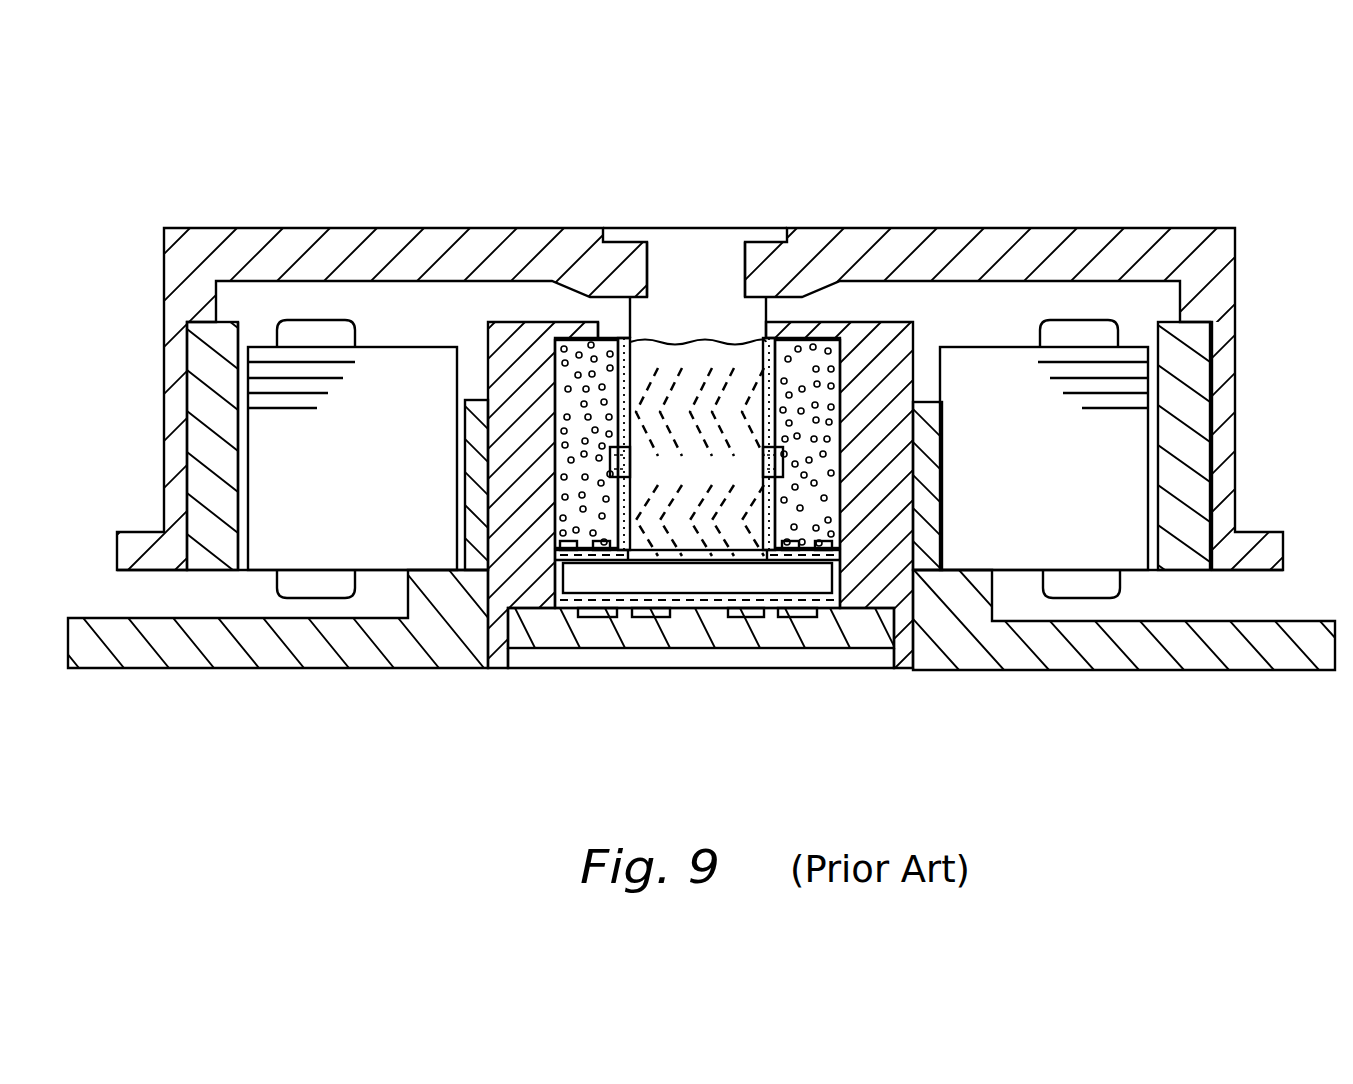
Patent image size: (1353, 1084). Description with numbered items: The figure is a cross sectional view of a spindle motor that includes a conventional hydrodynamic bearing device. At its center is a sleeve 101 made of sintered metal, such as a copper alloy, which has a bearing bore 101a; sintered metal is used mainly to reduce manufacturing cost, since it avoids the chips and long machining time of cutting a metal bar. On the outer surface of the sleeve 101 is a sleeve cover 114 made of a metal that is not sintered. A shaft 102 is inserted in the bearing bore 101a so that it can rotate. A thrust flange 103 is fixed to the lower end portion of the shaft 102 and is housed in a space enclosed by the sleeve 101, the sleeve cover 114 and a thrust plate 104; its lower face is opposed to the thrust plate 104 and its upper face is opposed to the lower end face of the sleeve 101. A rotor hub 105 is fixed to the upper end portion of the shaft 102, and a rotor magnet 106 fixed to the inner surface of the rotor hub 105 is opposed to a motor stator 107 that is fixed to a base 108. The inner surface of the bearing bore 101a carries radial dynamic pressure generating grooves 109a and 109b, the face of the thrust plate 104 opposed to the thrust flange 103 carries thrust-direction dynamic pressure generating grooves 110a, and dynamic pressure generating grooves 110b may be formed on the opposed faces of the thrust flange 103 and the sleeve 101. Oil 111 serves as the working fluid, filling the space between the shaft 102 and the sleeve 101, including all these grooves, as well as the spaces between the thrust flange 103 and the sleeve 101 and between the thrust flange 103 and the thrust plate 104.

The sleeve 101 is at (782, 352).
The bearing bore 101a is at (768, 522).
The shaft 102 is at (668, 318).
The thrust flange 103 is at (598, 580).
The thrust plate 104 is at (857, 637).
The rotor hub 105 is at (1037, 250).
The rotor magnet 106 is at (215, 432).
The motor stator 107 is at (295, 520).
The base 108 is at (1118, 642).
The dynamic pressure generating grooves 109a is at (730, 365).
The dynamic pressure generating grooves 109b is at (682, 560).
The dynamic pressure generating grooves 110a is at (680, 550).
The dynamic pressure generating grooves 110b is at (785, 555).
The oil 111 is at (626, 343).
The sleeve cover 114 is at (875, 335).